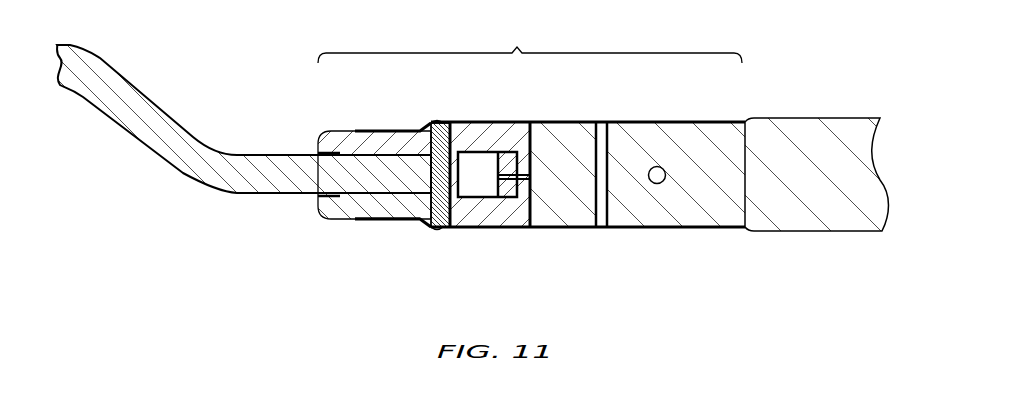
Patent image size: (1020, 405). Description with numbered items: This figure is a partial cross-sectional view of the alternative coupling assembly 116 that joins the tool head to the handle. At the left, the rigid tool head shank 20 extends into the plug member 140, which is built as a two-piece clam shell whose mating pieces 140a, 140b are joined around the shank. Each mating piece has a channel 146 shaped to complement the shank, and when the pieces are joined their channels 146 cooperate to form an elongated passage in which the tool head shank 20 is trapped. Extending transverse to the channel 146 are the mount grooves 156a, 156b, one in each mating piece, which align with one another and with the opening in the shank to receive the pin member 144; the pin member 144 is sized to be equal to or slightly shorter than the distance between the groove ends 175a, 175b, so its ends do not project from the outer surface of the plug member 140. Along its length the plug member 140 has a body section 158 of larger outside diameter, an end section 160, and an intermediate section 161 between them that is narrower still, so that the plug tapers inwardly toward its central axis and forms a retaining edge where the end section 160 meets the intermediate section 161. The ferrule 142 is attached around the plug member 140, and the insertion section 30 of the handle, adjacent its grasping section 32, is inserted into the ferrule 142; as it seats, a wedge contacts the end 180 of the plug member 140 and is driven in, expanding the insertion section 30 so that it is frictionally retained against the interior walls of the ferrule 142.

The tool head shank 20 is at (277, 160).
The insertion section 30 is at (688, 207).
The grasping section 32 is at (795, 135).
The coupling assembly 116 is at (530, 43).
The plug member 140 is at (336, 194).
The mating piece 140a is at (388, 143).
The mating piece 140b is at (397, 202).
The ferrule 142 is at (627, 121).
The pin member 144 is at (454, 142).
The channel 146 is at (507, 162).
The mount groove 156a is at (437, 124).
The mount groove 156b is at (447, 218).
The body section 158 is at (497, 207).
The end section 160 is at (315, 208).
The intermediate section 161 is at (377, 205).
The end of mount groove 175a is at (443, 143).
The end of mount groove 175b is at (438, 222).
The end of plug member 180 is at (534, 194).